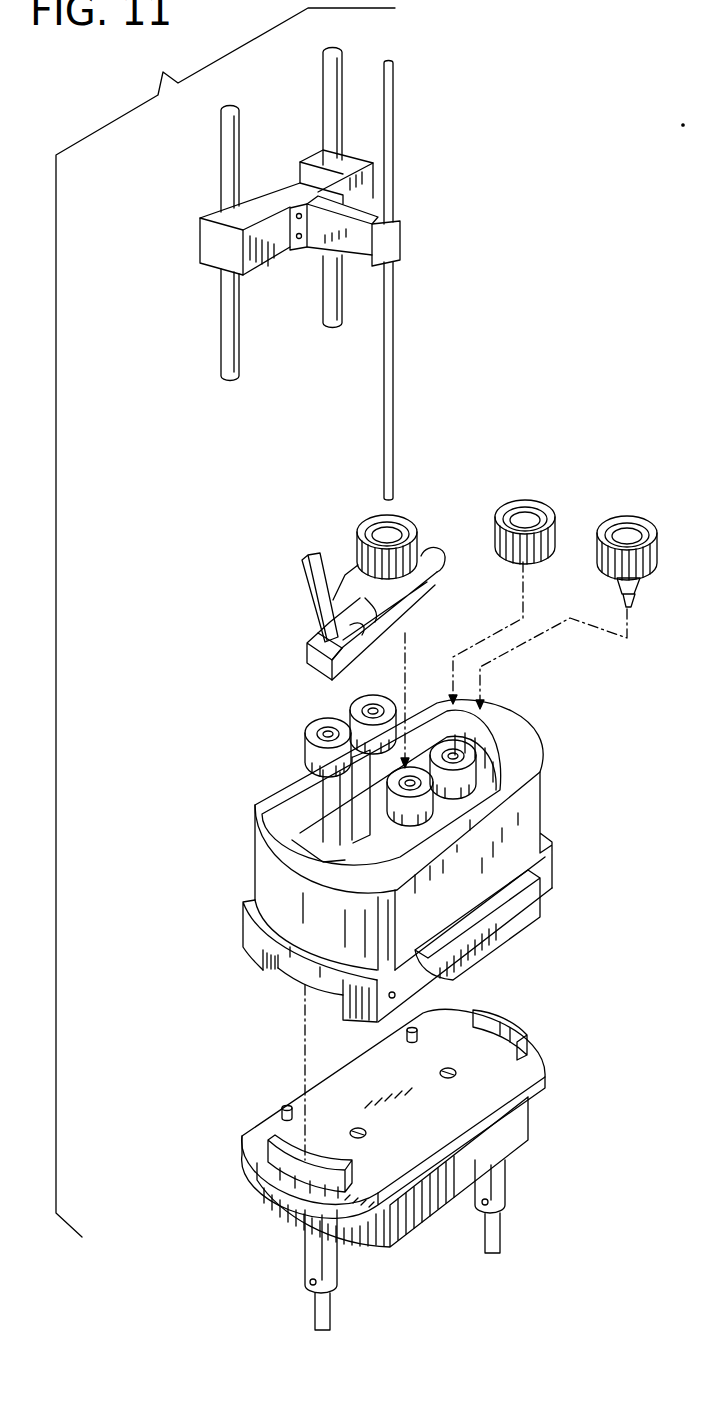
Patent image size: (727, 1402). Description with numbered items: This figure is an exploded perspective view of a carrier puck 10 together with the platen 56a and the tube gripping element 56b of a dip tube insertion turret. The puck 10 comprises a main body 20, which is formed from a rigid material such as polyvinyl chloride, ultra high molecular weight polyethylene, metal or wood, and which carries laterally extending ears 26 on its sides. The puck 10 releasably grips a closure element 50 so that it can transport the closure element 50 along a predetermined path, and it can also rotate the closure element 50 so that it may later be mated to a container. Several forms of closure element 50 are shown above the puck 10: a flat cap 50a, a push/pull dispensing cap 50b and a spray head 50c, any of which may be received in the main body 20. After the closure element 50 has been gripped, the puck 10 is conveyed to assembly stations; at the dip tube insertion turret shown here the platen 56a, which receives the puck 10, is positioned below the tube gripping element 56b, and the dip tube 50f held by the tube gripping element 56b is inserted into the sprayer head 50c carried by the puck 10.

The carrier puck 10 is at (410, 856).
The main body 20 is at (530, 803).
The laterally extending ears 26 is at (250, 867).
The closure element 50 is at (598, 567).
The flat cap 50a is at (533, 506).
The push/pull dispensing cap 50b is at (634, 525).
The spray head 50c is at (425, 547).
The dip tube 50f is at (390, 322).
The platen 56a is at (512, 1074).
The tube gripping element 56b is at (212, 242).